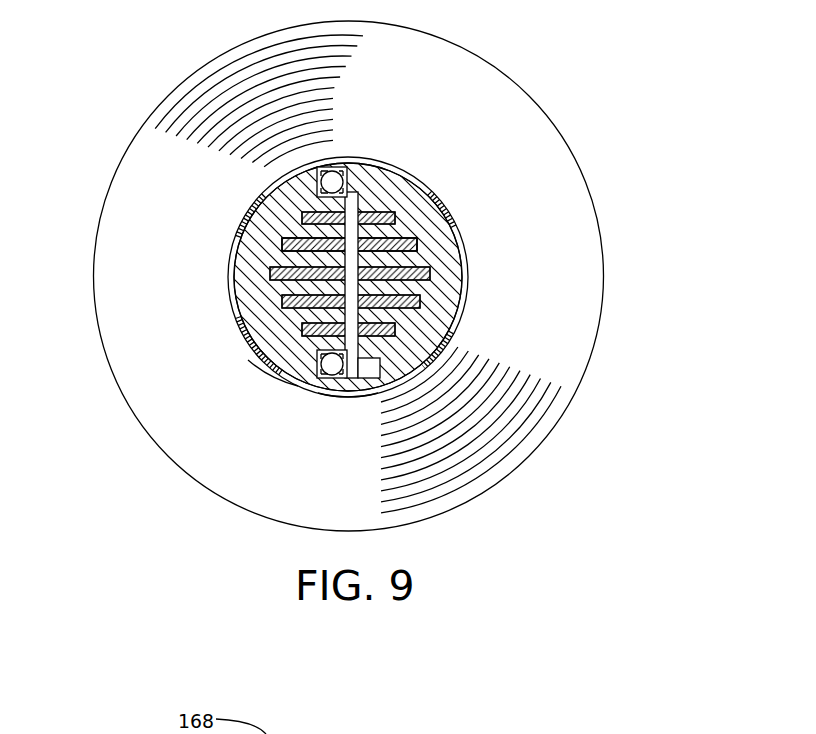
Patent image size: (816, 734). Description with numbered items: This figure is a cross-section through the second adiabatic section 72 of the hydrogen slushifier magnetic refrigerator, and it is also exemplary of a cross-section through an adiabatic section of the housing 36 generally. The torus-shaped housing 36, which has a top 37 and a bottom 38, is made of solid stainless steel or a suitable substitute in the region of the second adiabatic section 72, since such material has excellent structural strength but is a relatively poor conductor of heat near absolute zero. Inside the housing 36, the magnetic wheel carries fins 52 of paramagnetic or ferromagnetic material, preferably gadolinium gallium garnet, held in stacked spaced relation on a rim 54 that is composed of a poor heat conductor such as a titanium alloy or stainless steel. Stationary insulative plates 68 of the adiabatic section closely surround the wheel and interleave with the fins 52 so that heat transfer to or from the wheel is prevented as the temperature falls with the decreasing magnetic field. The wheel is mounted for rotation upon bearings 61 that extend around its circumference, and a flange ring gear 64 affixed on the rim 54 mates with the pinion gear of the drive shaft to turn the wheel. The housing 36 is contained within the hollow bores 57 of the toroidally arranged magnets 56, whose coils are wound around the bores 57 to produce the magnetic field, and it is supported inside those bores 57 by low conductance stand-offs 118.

The housing 36 is at (458, 287).
The top 37 is at (381, 158).
The bottom 38 is at (335, 395).
The fins 52 is at (417, 250).
The rim 54 is at (417, 238).
The magnets 56 is at (96, 312).
The hollow bore 57 is at (277, 377).
The bearings 61 is at (320, 183).
The flange ring gear 64 is at (375, 368).
The stationary insulative plates 68 is at (393, 313).
The second adiabatic section 72 is at (410, 198).
The low conductance stand-offs 118 is at (443, 200).